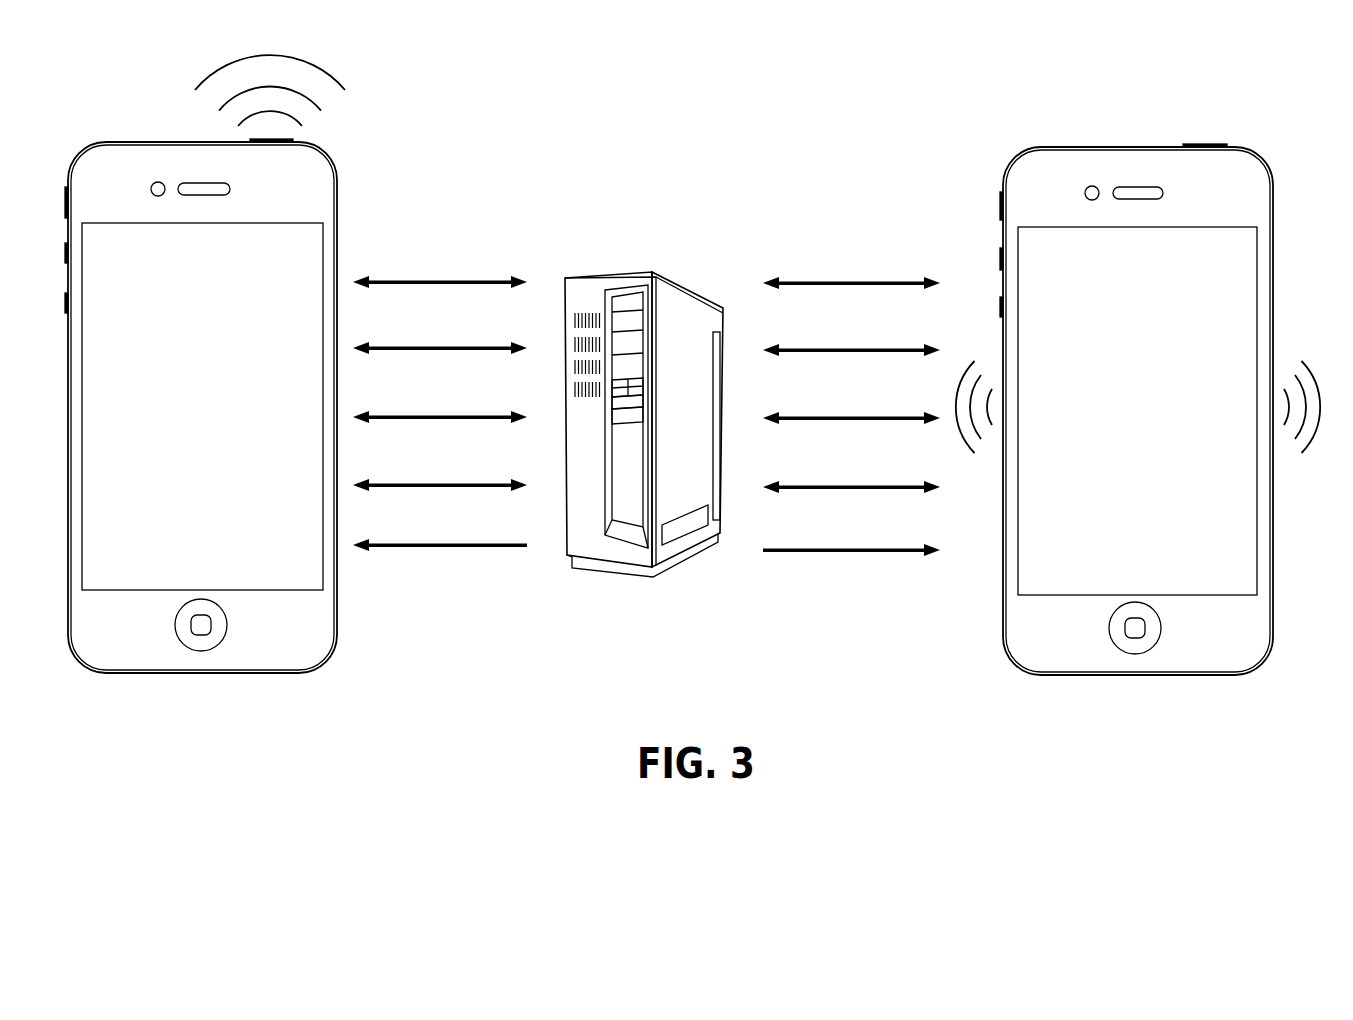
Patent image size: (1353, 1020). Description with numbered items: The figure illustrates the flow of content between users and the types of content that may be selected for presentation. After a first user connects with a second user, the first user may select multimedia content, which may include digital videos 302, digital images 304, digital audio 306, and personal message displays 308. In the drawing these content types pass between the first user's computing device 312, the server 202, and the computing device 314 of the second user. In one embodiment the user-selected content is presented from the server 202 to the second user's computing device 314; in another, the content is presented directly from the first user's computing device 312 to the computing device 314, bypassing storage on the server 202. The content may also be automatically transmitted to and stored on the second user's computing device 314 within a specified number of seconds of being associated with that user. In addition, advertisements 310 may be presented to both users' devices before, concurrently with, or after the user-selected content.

The server 202 is at (620, 272).
The digital videos 302 is at (497, 284).
The digital images 304 is at (497, 350).
The digital audio 306 is at (497, 419).
The personal message displays 308 is at (497, 487).
The advertisement 310 is at (497, 547).
The first user's computing device 312 is at (200, 673).
The computing device of the second user 314 is at (1097, 675).